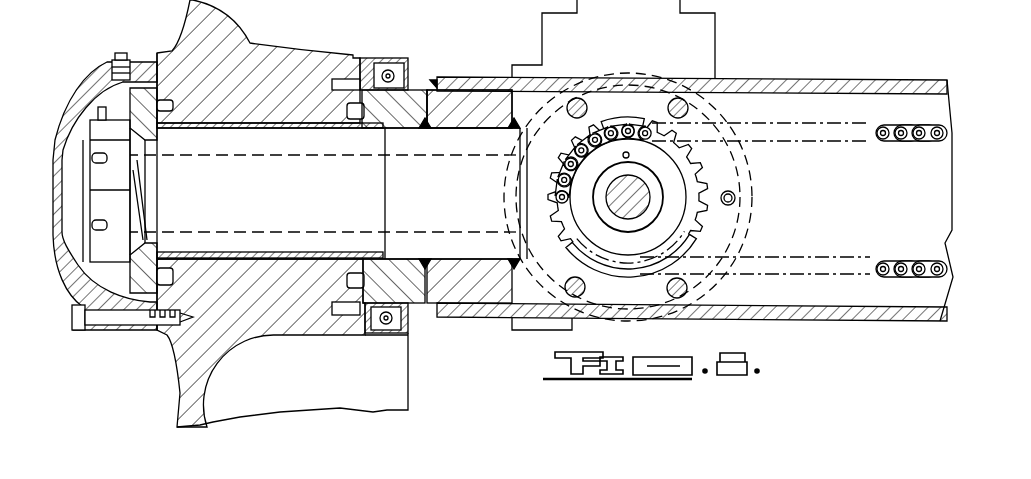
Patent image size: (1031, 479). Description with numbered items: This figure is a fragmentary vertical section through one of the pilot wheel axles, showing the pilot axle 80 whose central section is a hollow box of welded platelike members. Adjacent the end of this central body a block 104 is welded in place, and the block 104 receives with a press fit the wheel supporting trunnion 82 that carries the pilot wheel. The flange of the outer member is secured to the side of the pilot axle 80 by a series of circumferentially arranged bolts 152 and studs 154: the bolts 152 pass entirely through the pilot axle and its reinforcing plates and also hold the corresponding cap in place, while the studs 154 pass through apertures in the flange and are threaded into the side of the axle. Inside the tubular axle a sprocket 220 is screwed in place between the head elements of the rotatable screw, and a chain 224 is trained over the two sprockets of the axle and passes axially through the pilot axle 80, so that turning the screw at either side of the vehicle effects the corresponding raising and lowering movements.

The pilot axle 80 is at (796, 90).
The wheel supporting trunnion 82 is at (440, 140).
The block 104 is at (470, 298).
The bolt 152 is at (588, 107).
The stud 154 is at (503, 200).
The sprocket 220 is at (681, 168).
The chain 224 is at (931, 129).